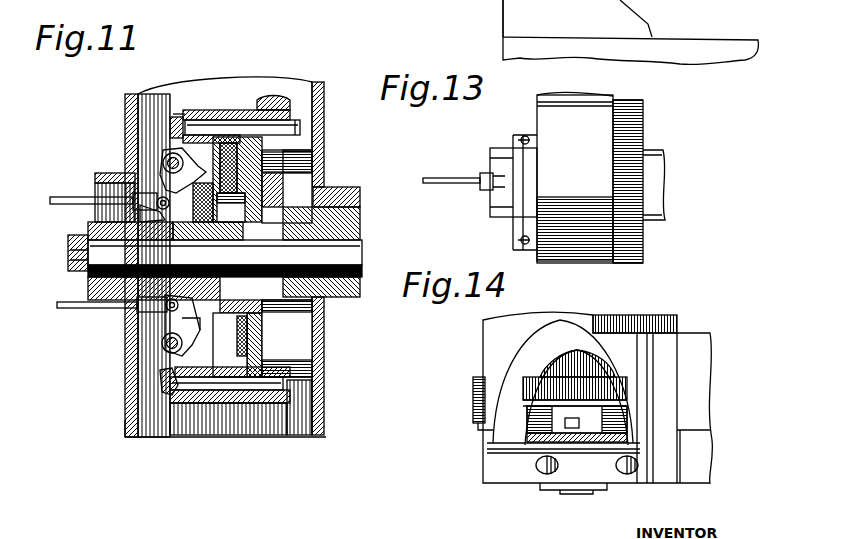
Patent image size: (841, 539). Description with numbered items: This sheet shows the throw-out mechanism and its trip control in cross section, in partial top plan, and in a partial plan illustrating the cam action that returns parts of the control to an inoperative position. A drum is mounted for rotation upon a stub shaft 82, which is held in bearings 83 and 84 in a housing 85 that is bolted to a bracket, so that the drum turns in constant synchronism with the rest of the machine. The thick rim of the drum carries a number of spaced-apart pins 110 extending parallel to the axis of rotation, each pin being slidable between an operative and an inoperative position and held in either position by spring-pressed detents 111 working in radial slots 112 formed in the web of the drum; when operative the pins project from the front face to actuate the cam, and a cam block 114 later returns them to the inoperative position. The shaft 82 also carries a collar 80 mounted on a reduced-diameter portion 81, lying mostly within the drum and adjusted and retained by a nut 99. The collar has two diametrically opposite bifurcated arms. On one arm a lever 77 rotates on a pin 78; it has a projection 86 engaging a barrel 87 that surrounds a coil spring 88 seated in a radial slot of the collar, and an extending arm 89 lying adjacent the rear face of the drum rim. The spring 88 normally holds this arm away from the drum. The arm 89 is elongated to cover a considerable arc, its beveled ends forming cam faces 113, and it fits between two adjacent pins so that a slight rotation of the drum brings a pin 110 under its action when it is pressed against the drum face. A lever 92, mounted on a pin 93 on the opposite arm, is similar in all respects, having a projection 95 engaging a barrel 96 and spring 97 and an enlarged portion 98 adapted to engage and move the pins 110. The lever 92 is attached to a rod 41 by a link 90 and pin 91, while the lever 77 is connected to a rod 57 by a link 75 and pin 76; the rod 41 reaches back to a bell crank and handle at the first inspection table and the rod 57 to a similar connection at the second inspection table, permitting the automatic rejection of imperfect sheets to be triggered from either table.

In FIG. 11, the rod 41 is at (57, 305).
In FIG. 11, the rod 57 is at (52, 200).
In FIG. 11, the link 75 is at (140, 212).
In FIG. 11, the pin 76 is at (133, 197).
In FIG. 11, the lever 77 is at (158, 178).
In FIG. 11, the pin 78 is at (165, 158).
In FIG. 11, the collar 80 is at (162, 348).
In FIG. 11, the reduced-diameter portion of shaft 81 is at (90, 293).
In FIG. 11, the stub shaft 82 is at (356, 262).
In FIG. 14, the stub shaft 82 is at (575, 492).
In FIG. 11, the bearing 83 is at (92, 228).
In FIG. 11, the bearing 84 is at (358, 227).
In FIG. 11, the housing 85 is at (128, 112).
In FIG. 11, the projection 86 is at (190, 118).
In FIG. 11, the barrel 87 is at (320, 178).
In FIG. 11, the coil spring 88 is at (332, 192).
In FIG. 11, the extending arm 89 is at (172, 115).
In FIG. 11, the link 90 is at (132, 306).
In FIG. 11, the pin 91 is at (140, 320).
In FIG. 11, the lever 92 is at (127, 433).
In FIG. 11, the pin 93 is at (125, 396).
In FIG. 11, the projection 95 is at (194, 418).
In FIG. 11, the barrel 96 is at (292, 322).
In FIG. 11, the spring 97 is at (292, 305).
In FIG. 11, the enlarged portion 98 is at (158, 405).
In FIG. 11, the nut 99 is at (72, 270).
In FIG. 11, the pins 110 is at (207, 130).
In FIG. 14, the pins 110 is at (527, 443).
In FIG. 11, the spring-pressed detents 111 is at (268, 100).
In FIG. 11, the radial slots 112 is at (300, 160).
In FIG. 13, the cam faces 113 is at (520, 140).
In FIG. 14, the cam block 114 is at (597, 423).